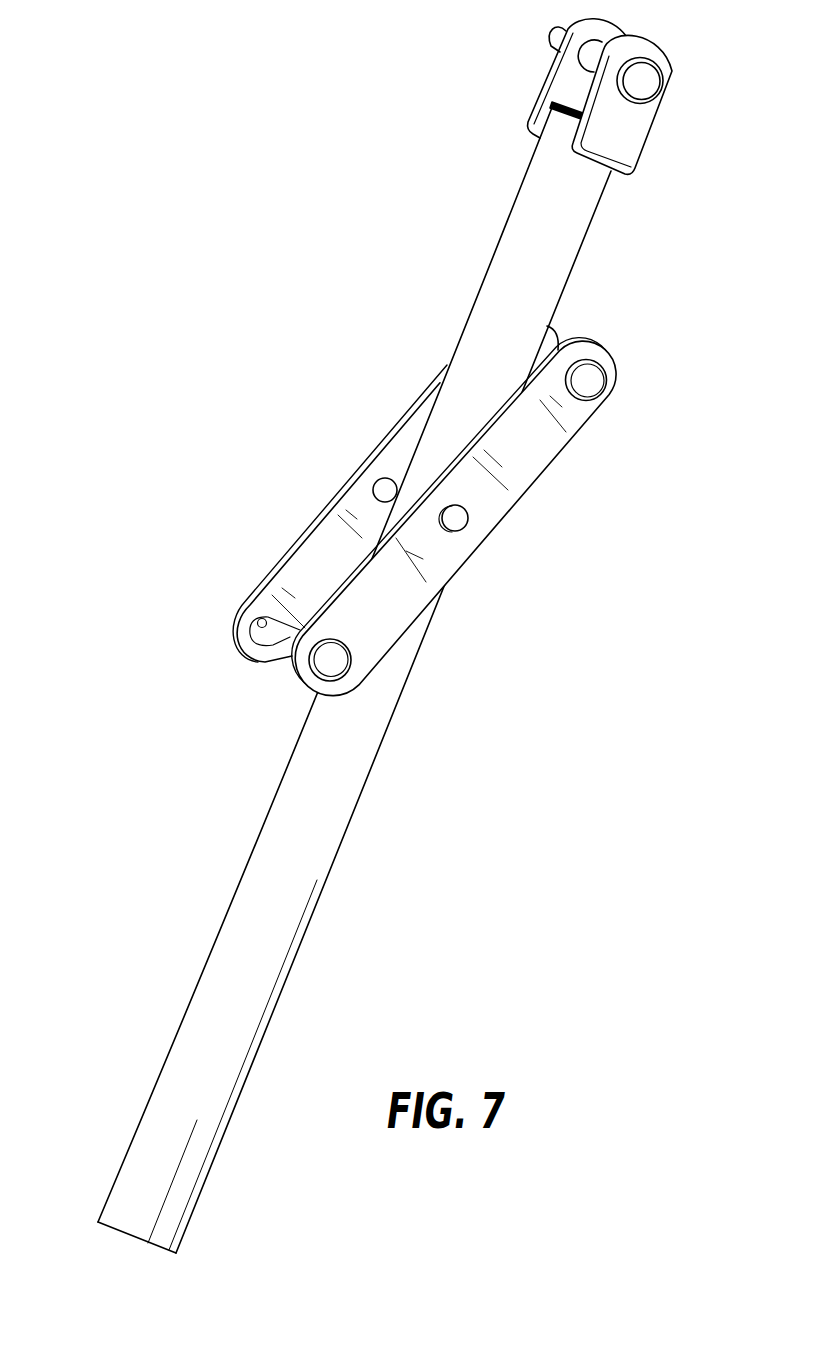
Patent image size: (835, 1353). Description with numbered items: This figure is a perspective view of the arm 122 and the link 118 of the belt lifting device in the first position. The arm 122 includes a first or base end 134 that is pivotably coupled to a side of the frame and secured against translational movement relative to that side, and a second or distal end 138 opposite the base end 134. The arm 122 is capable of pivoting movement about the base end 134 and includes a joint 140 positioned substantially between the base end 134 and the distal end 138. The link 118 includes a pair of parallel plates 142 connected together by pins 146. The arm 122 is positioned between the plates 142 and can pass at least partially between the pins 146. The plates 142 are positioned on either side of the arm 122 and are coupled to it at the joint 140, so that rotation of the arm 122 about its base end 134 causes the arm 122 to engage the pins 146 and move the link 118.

The link 118 is at (352, 414).
The arm 122 is at (368, 812).
The base end 134 is at (620, 137).
The distal end 138 is at (130, 1178).
The joint 140 is at (583, 329).
The plates 142 is at (339, 625).
The pins 146 is at (588, 382).